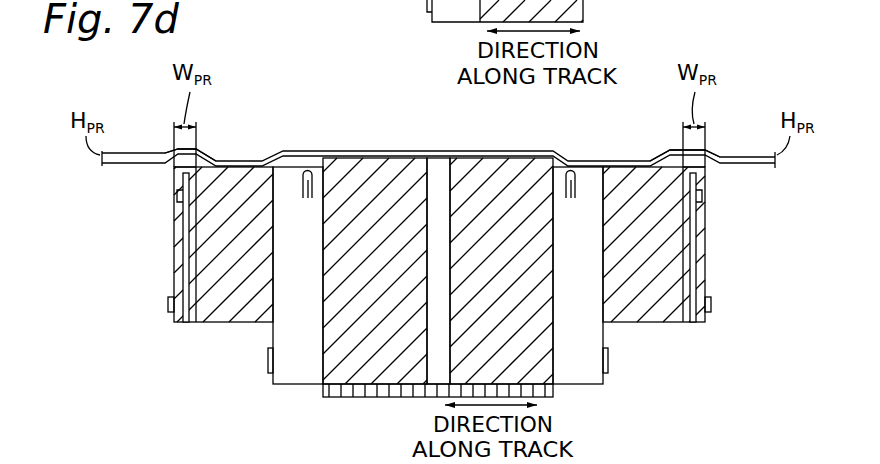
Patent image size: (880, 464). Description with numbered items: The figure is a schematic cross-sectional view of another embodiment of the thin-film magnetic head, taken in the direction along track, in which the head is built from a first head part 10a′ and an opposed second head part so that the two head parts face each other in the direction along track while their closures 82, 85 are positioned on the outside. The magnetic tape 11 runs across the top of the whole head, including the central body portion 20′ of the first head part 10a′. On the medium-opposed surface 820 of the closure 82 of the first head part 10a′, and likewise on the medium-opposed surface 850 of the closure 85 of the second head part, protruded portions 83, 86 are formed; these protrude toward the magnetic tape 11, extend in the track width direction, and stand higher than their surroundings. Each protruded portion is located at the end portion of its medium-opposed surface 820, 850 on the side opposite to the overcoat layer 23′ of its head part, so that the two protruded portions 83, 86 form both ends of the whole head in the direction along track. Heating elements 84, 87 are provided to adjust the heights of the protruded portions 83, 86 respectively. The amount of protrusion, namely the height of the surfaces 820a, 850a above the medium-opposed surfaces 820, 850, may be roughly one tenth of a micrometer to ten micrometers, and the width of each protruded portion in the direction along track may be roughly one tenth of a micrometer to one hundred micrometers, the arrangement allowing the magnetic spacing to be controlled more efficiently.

The magnetic tape 11 is at (708, 151).
The closure 82 is at (262, 168).
The medium-opposed surface 820 is at (218, 152).
The surface of protruded portion 820a is at (178, 164).
The protruded portion 83 is at (180, 171).
The heating element 84 is at (165, 187).
The first head part 10a′ is at (308, 392).
The overcoat layer 23′ is at (300, 180).
The first head body 20′ is at (372, 173).
The closure 85 is at (620, 185).
The medium-opposed surface 850 is at (645, 165).
The surface of protruded portion 850a is at (698, 164).
The protruded portion 86 is at (700, 171).
The heating element 87 is at (712, 187).